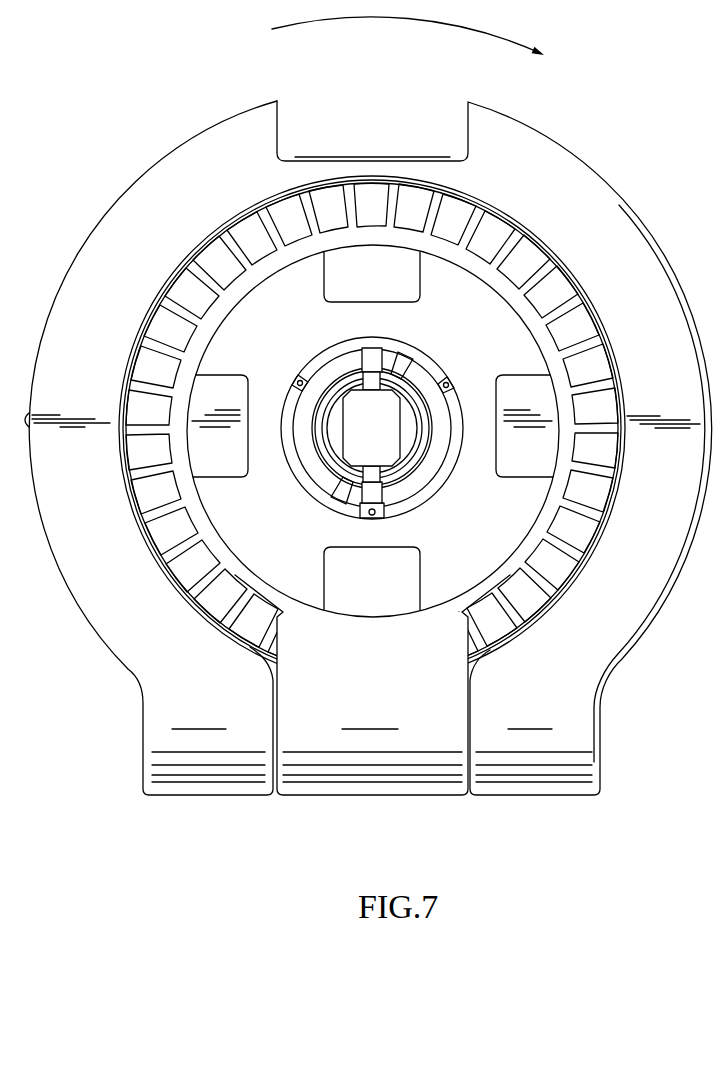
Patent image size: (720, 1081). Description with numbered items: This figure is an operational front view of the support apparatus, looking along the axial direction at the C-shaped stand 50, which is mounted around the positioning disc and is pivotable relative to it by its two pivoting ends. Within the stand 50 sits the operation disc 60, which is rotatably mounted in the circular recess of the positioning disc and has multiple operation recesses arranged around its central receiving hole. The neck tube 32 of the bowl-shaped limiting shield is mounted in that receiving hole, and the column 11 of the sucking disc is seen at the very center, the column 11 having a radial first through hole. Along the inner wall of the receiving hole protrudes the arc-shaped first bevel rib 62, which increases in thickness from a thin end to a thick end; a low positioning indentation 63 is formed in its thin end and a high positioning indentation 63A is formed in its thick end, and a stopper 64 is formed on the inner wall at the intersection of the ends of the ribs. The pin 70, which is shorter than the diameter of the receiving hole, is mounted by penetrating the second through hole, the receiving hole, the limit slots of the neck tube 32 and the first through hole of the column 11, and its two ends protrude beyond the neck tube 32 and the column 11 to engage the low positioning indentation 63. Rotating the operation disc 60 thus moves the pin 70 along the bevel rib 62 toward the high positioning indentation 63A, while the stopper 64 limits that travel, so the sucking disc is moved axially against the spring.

The stand 50 is at (567, 163).
The operation disc 60 is at (503, 320).
The first bevel rib 62 is at (345, 362).
The low positioning indentation 63 is at (370, 350).
The high positioning indentation 63A is at (340, 490).
The stopper 64 is at (399, 358).
The pin 70 is at (380, 352).
The neck tube 32 is at (410, 386).
The column 11 is at (386, 450).